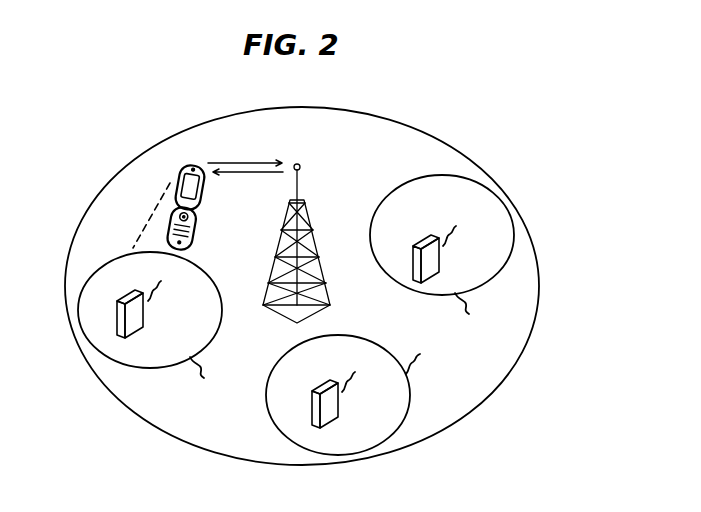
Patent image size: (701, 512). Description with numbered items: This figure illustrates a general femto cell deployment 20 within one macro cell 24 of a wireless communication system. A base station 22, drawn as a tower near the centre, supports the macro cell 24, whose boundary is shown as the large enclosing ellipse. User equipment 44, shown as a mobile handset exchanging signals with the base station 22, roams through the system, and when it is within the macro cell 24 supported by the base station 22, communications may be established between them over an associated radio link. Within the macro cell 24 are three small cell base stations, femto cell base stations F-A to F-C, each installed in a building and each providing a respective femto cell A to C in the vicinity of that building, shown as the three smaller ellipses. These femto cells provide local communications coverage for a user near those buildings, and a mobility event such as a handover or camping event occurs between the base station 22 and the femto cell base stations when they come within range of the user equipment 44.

The wireless communication system 20 is at (70, 181).
The base station 22 is at (317, 241).
The macro cell 24 is at (178, 437).
The user equipment 44 is at (199, 224).